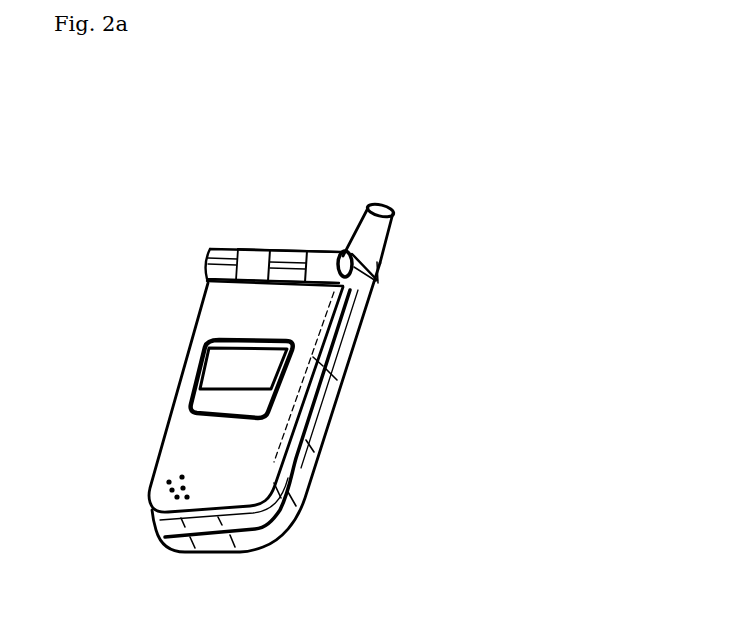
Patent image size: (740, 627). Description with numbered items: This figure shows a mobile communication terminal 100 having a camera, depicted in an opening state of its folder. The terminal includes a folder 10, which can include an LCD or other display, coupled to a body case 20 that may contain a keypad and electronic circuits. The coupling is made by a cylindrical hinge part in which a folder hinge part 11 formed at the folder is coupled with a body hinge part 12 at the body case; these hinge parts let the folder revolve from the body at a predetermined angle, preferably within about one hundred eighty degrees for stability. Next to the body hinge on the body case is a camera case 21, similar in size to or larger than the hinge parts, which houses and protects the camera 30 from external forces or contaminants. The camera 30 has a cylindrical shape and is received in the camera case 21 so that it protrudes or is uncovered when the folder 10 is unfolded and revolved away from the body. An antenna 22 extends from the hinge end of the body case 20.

The mobile communication terminal 100 is at (506, 258).
The folder 10 is at (228, 320).
The body case 20 is at (318, 442).
The folder hinge part 11 is at (283, 257).
The body hinge part 12 is at (257, 258).
The camera case 21 is at (325, 257).
The antenna 22 is at (375, 239).
The camera 30 is at (376, 270).